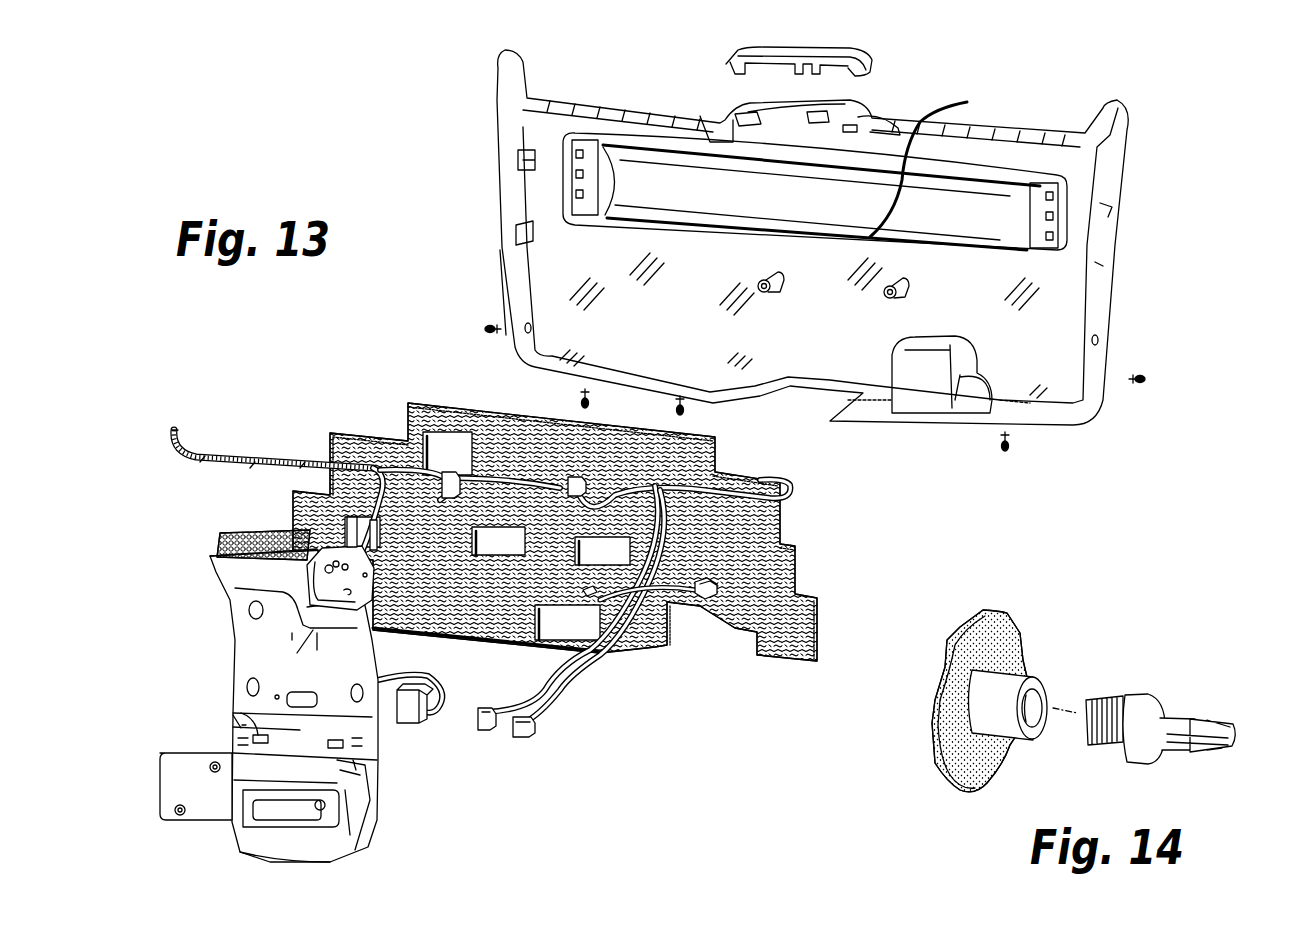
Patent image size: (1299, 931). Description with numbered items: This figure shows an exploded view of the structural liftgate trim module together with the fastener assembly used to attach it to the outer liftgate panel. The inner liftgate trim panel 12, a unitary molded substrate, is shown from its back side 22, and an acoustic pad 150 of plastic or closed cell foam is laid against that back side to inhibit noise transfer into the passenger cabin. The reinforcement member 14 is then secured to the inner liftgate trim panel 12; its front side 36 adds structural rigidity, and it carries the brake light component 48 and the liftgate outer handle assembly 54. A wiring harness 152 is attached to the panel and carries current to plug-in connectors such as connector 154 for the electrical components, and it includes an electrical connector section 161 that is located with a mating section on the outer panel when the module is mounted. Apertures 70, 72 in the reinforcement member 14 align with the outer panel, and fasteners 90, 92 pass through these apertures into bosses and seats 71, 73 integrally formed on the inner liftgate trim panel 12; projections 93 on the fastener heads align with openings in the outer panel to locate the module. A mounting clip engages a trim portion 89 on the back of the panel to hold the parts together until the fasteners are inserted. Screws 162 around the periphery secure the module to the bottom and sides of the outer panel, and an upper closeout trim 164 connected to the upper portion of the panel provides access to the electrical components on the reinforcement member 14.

In FIG. 13, the inner liftgate trim panel 12 is at (1112, 332).
In FIG. 14, the inner liftgate trim panel 12 is at (1005, 675).
In FIG. 13, the inner liftgate trim panel reinforcement member 14 is at (234, 646).
In FIG. 13, the back side 22 is at (518, 300).
In FIG. 13, the front side 36 is at (230, 628).
In FIG. 13, the brake light component 48 is at (225, 540).
In FIG. 13, the liftgate outer handle assembly 54 is at (236, 845).
In FIG. 13, the aperture 70 is at (340, 778).
In FIG. 13, the boss and seat 71 is at (882, 285).
In FIG. 13, the aperture 72 is at (246, 716).
In FIG. 13, the boss and seat 73 is at (756, 280).
In FIG. 13, the trim portion 89 is at (937, 161).
In FIG. 14, the fastener 90 is at (1142, 697).
In FIG. 14, the fastener 92 is at (1010, 677).
In FIG. 14, the projection 93 is at (1218, 732).
In FIG. 13, the acoustic pad 150 is at (792, 557).
In FIG. 13, the wiring harness 152 is at (240, 456).
In FIG. 13, the plug-in connector 154 is at (532, 737).
In FIG. 13, the electrical connector section 161 is at (412, 725).
In FIG. 13, the screws 162 is at (484, 331).
In FIG. 13, the upper closeout trim 164 is at (890, 62).